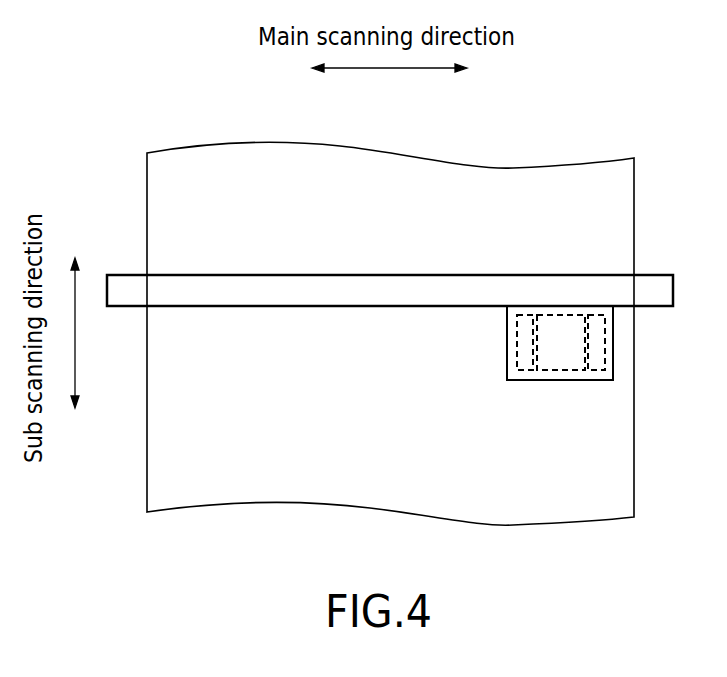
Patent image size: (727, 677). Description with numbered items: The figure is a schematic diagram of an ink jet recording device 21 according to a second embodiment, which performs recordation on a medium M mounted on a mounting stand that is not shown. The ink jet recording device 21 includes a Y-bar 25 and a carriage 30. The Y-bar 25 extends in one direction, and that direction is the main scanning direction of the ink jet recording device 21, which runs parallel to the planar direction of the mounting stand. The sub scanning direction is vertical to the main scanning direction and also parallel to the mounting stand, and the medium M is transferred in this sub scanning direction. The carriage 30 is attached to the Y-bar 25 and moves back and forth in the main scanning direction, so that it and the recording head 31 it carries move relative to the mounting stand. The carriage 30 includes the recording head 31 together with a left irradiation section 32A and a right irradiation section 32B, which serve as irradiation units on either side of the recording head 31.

The ink jet recording device 21 is at (620, 119).
The Y-bar 25 is at (390, 273).
The carriage 30 is at (613, 347).
The recording head 31 is at (560, 371).
The left irradiation section 32A is at (527, 371).
The right irradiation section 32B is at (598, 372).
The medium M is at (390, 490).